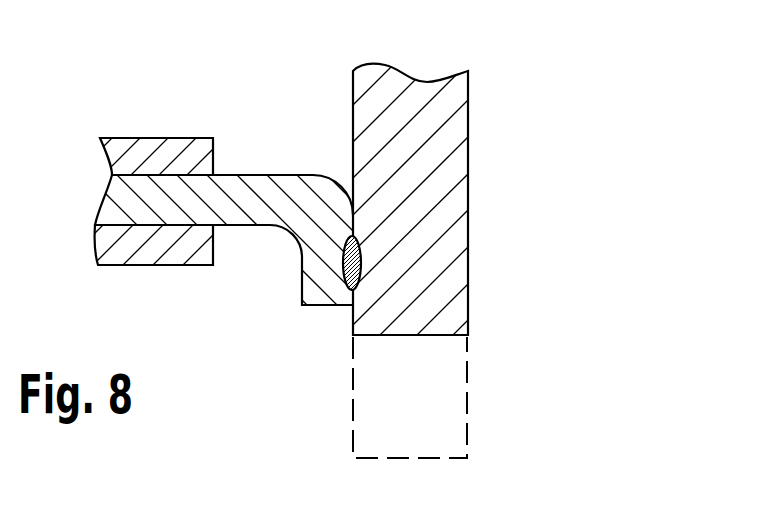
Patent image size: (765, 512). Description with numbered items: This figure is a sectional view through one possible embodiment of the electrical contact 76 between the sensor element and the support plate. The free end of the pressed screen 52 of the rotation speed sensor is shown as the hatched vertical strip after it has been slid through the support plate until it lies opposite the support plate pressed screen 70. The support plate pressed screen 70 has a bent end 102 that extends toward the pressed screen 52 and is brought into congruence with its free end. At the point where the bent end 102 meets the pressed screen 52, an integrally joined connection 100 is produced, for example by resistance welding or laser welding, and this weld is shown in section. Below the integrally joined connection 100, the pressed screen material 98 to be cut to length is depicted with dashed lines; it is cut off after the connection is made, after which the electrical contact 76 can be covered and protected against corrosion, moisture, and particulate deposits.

The pressed screen 52 is at (420, 167).
The support plate pressed screen 70 is at (152, 165).
The electrical contact 76 is at (308, 75).
The pressed screen material to be cut to length 98 is at (475, 336).
The integrally joined connection 100 is at (365, 263).
The bent end 102 is at (272, 200).